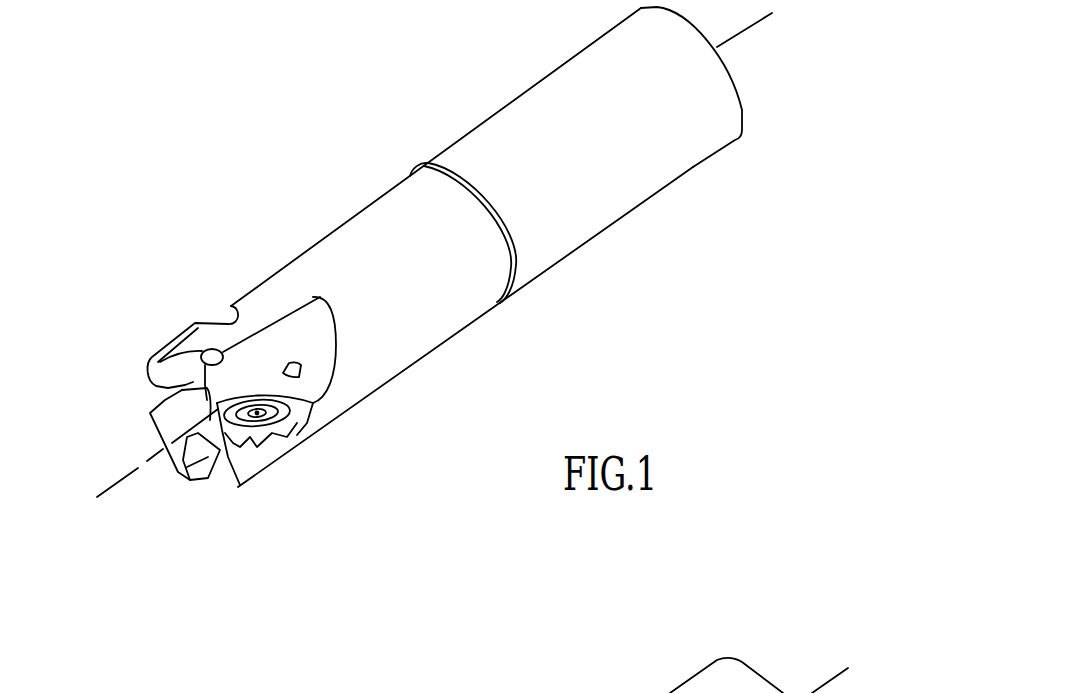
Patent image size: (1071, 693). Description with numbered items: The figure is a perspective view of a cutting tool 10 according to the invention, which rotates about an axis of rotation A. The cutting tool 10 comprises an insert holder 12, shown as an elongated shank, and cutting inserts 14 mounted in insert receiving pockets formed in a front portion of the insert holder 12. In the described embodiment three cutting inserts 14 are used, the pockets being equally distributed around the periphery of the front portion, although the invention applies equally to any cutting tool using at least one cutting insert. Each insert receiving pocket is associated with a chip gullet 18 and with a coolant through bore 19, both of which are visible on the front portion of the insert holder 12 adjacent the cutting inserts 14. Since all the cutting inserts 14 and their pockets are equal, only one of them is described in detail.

The cutting tool 10 is at (572, 313).
The insert holder 12 is at (653, 165).
The cutting inserts 14 is at (155, 370).
The chip gullet 18 is at (320, 348).
The coolant through bore 19 is at (293, 360).
The axis of rotation A is at (123, 473).